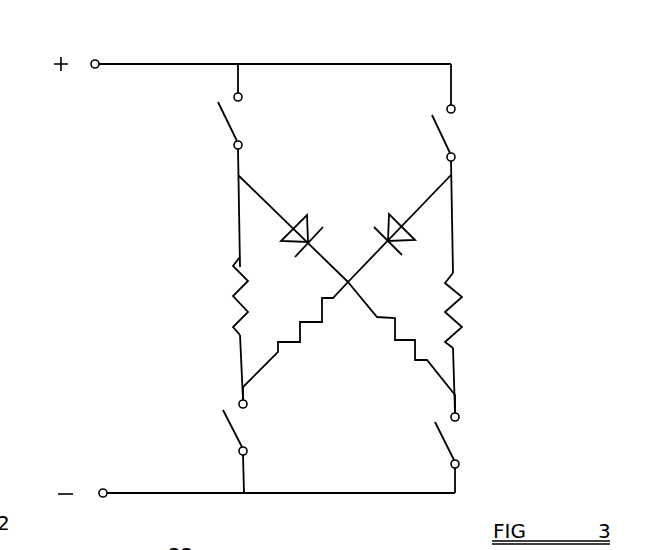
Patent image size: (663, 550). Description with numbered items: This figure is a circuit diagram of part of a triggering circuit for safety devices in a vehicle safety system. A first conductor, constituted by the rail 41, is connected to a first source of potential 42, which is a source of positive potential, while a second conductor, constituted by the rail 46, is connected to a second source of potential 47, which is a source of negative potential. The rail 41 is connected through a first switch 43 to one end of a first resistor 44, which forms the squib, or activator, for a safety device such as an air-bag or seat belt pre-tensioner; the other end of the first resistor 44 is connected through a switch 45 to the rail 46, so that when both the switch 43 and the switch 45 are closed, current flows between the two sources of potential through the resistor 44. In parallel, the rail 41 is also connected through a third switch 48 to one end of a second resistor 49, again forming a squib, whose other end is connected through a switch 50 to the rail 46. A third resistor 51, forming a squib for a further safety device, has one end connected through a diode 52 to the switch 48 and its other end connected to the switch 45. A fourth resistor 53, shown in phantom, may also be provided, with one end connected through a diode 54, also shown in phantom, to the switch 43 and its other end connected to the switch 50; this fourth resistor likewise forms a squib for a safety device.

The rail 41 is at (168, 64).
The first source of potential 42 is at (67, 63).
The first switch 43 is at (230, 122).
The first resistor 44 is at (233, 302).
The switch 45 is at (233, 435).
The rail 46 is at (203, 493).
The second source of potential 47 is at (105, 497).
The third switch 48 is at (443, 138).
The second resistor 49 is at (463, 295).
The switch 50 is at (453, 446).
The third resistor 51 is at (300, 342).
The diode 52 is at (398, 215).
The fourth resistor 53 is at (398, 342).
The diode 54 is at (307, 216).